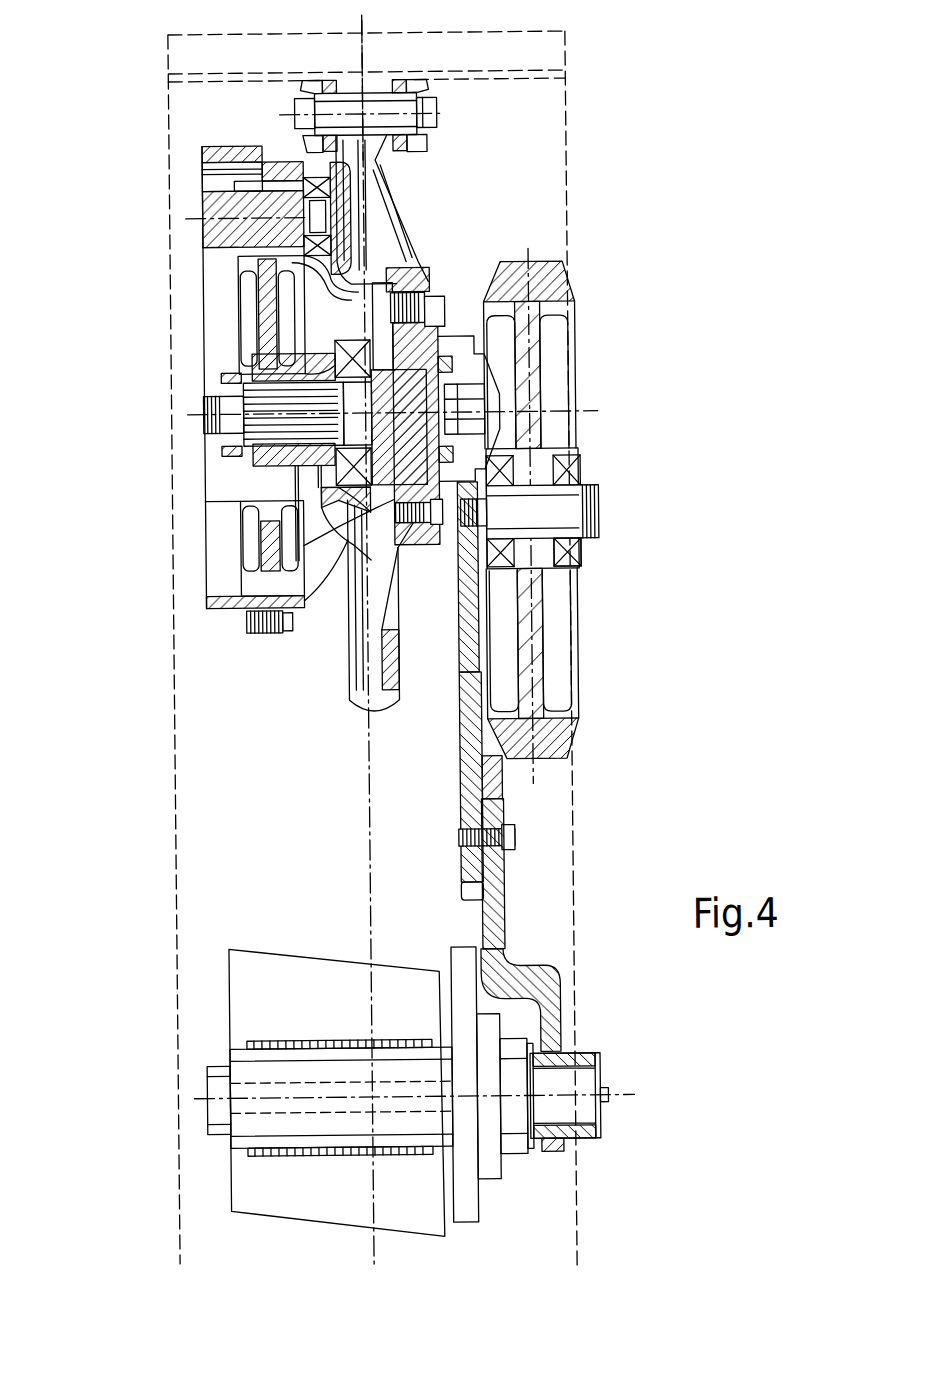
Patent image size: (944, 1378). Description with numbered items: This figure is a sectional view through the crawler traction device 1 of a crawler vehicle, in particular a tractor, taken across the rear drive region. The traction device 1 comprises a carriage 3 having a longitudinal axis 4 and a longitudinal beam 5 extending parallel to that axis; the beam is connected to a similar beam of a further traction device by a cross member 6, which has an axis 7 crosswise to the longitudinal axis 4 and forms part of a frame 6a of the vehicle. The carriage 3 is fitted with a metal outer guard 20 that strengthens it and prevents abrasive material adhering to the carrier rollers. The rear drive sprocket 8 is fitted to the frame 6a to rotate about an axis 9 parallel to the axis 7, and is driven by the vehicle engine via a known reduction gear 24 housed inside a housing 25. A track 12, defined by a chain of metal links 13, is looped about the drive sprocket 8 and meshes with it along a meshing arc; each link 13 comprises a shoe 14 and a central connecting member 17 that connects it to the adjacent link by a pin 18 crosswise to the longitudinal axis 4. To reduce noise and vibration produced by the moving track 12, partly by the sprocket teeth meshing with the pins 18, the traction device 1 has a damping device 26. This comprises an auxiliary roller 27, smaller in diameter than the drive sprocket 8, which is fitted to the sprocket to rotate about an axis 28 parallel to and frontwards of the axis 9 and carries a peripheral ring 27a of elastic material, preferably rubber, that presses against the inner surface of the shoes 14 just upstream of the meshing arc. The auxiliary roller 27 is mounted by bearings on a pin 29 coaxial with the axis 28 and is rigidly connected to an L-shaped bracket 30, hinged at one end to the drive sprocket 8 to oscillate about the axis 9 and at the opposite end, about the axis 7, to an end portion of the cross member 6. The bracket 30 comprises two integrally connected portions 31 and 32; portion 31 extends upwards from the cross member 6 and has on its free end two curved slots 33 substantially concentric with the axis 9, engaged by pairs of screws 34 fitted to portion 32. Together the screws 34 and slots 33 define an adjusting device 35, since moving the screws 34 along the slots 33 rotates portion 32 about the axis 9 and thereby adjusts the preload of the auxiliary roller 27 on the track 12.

The crawler traction device 1 is at (130, 522).
The carriage 3 is at (380, 1088).
The longitudinal axis 4 is at (372, 1238).
The longitudinal beam 5 is at (245, 1172).
The cross member 6 is at (208, 1060).
The frame 6a is at (222, 1020).
The axis 7 is at (600, 1097).
The rear drive sprocket 8 is at (392, 235).
The axis 9 is at (200, 410).
The track 12 is at (188, 748).
The metal links 13 is at (430, 85).
The shoe 14 is at (465, 75).
The central connecting member 17 is at (332, 80).
The pin 18 is at (410, 124).
The metal outer guard 20 is at (478, 1200).
The reduction gear 24 is at (226, 318).
The housing 25 is at (247, 620).
The damping device 26 is at (582, 398).
The auxiliary roller 27 is at (540, 428).
The peripheral ring 27a is at (566, 292).
The axis 28 is at (610, 508).
The pin 29 is at (555, 525).
The L-shaped bracket 30 is at (512, 887).
The portion 31 is at (540, 972).
The portion 32 is at (470, 690).
The curved slots 33 is at (493, 823).
The screws 34 is at (459, 836).
The adjusting device 35 is at (452, 790).